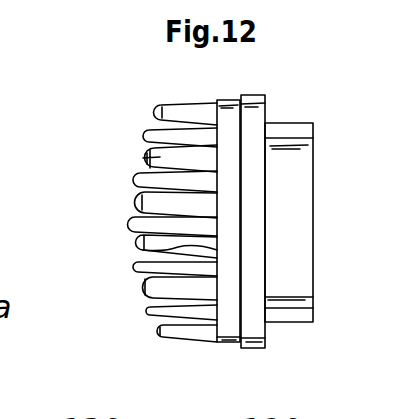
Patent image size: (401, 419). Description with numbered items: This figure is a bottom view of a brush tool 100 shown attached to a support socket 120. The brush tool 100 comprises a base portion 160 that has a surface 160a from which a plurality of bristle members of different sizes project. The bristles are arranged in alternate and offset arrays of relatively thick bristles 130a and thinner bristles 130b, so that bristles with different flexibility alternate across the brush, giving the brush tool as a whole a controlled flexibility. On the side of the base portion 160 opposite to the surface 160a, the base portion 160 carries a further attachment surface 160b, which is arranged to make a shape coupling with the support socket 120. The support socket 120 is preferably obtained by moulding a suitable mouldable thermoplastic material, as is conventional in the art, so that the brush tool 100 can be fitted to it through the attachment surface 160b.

The brush tool 100 is at (133, 123).
The support socket 120 is at (292, 278).
The relatively thick bristles 130a is at (150, 160).
The thinner bristles 130b is at (150, 308).
The base portion 160 is at (233, 310).
The surface 160a is at (150, 243).
The attachment surface 160b is at (243, 147).